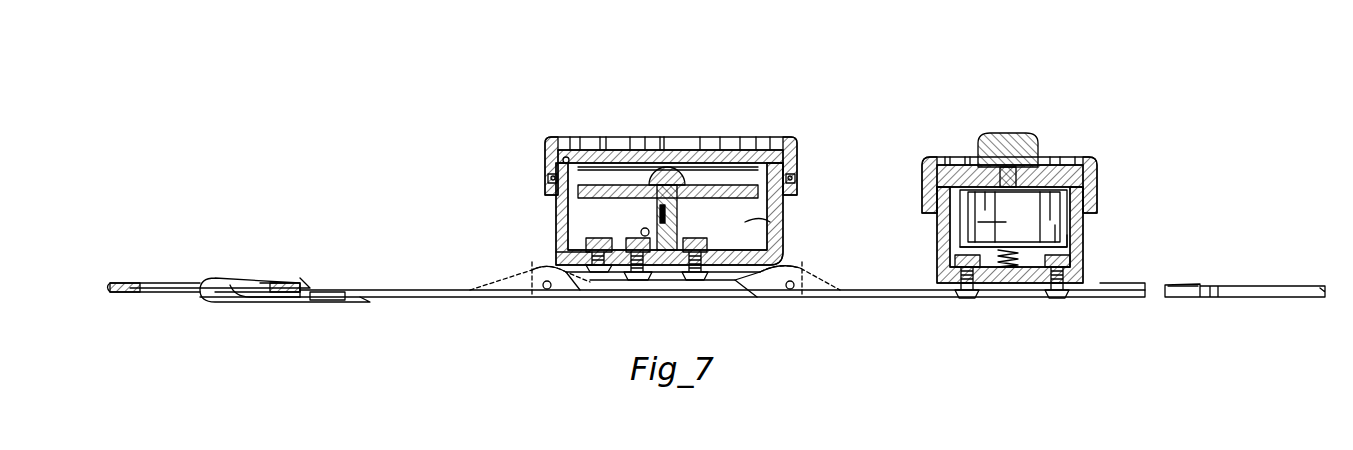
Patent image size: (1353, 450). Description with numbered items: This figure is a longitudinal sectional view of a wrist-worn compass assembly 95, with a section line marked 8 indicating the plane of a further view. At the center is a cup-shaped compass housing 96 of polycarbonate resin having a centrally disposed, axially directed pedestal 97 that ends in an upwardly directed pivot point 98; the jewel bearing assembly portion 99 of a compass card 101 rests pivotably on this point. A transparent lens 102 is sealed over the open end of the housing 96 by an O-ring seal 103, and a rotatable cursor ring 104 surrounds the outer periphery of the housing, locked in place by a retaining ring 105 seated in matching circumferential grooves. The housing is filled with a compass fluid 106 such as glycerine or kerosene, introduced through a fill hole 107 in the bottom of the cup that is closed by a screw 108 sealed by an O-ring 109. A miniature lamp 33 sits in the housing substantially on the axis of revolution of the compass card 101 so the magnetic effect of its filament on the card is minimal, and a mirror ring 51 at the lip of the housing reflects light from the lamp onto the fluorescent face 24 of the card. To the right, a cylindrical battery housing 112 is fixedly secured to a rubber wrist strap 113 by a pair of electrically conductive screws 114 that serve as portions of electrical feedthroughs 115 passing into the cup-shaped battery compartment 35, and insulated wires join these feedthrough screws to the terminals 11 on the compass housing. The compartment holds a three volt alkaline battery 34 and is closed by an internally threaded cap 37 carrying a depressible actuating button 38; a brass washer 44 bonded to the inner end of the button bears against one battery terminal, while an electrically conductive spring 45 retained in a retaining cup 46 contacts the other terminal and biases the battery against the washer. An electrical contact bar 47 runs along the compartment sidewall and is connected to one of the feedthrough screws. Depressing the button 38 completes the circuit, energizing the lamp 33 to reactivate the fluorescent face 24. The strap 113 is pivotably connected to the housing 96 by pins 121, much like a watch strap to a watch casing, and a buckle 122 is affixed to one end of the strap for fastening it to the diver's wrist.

The section line 8- 8 is at (268, 105).
The screw 11 is at (650, 282).
The fluorescent face 24 is at (545, 185).
The lamp 33 is at (640, 232).
The battery 34 is at (1013, 218).
The battery compartment 35 is at (1085, 255).
The cap 37 is at (1120, 160).
The actuating button 38 is at (990, 135).
The brass washer 44 is at (950, 190).
The spring 45 is at (1005, 270).
The retaining cup 46 is at (1010, 268).
The electrical contact bar 47 is at (1072, 240).
The mirror ring 51 is at (580, 147).
The compass assembly 95 is at (667, 192).
The compass housing 96 is at (785, 240).
The pedestal 97 is at (680, 225).
The pivot point 98 is at (658, 213).
The jewel bearing assembly portion 99 is at (682, 190).
The compass card 101 is at (612, 185).
The transparent lens 102 is at (652, 150).
The O-ring seal 103 is at (775, 135).
The rotatable cursor ring 104 is at (798, 185).
The retaining ring 105 is at (792, 178).
The compass fluid 106 is at (760, 222).
The fill hole 107 is at (590, 243).
The screw 108 is at (598, 272).
The O-ring 109 is at (560, 264).
The battery housing 112 is at (937, 240).
The wrist strap 113 is at (410, 290).
The screws 114 is at (965, 298).
The electrical feedthroughs 115 is at (955, 277).
The pins 121 is at (545, 290).
The buckle 122 is at (168, 282).